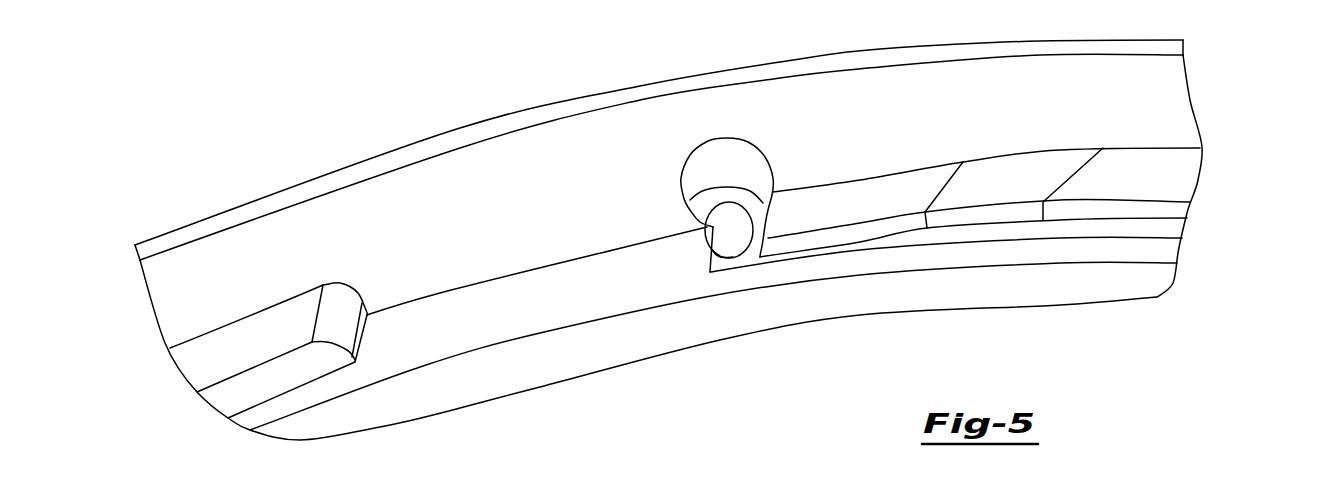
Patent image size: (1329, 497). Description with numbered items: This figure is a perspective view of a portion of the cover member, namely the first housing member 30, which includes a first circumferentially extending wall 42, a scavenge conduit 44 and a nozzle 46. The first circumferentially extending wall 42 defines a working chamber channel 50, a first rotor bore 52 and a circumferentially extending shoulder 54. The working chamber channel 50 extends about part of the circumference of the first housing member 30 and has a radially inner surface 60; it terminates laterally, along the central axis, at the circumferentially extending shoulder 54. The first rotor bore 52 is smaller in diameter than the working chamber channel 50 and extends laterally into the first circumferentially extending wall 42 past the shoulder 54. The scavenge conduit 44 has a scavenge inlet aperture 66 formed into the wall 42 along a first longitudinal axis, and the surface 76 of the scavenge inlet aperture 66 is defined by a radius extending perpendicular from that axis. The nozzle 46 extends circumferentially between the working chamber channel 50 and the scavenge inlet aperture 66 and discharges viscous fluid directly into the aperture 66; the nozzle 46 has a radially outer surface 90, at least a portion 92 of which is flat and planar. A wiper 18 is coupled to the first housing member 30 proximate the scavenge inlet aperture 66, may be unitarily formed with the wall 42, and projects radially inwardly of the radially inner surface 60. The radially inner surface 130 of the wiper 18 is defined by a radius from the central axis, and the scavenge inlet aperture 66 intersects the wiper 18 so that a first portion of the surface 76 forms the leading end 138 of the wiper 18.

The wiper 18 is at (390, 281).
The first housing member 30 is at (213, 223).
The first circumferentially extending wall 42 is at (390, 192).
The scavenge conduit 44 is at (747, 137).
The nozzle 46 is at (817, 245).
The working chamber channel 50 is at (1172, 167).
The first rotor bore 52 is at (1140, 253).
The circumferentially extending shoulder 54 is at (1140, 227).
The radially inner surface 60 is at (986, 170).
The scavenge inlet aperture 66 is at (682, 182).
The surface 76 is at (698, 167).
The radially outer surface 90 is at (1013, 173).
The portion 92 is at (835, 193).
The radially inner surface 130 is at (453, 315).
The leading end 138 is at (683, 218).